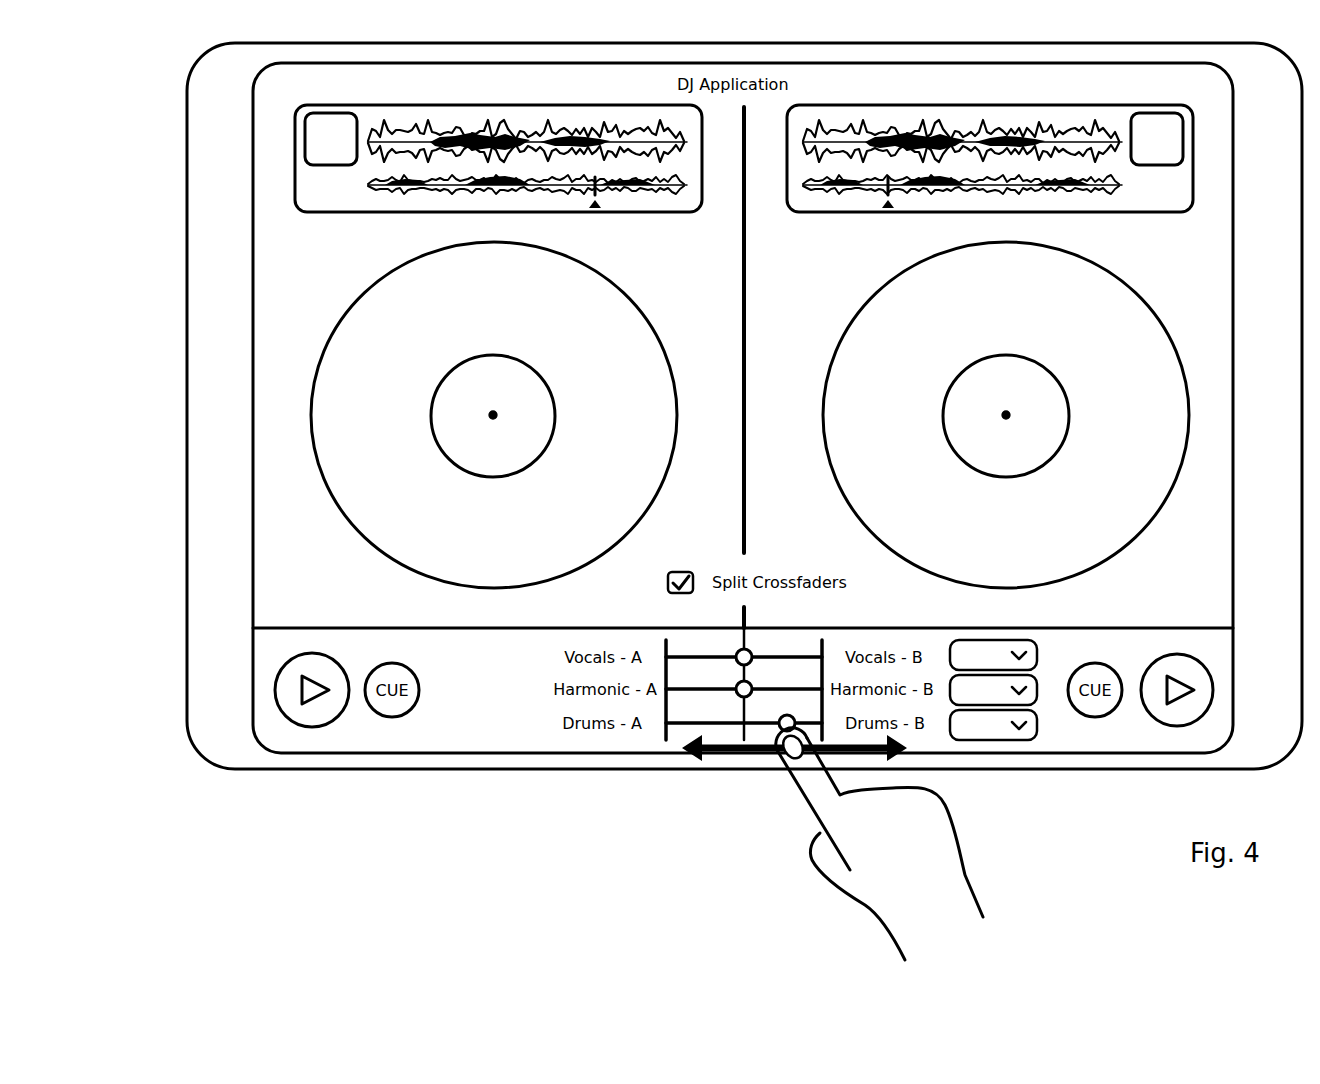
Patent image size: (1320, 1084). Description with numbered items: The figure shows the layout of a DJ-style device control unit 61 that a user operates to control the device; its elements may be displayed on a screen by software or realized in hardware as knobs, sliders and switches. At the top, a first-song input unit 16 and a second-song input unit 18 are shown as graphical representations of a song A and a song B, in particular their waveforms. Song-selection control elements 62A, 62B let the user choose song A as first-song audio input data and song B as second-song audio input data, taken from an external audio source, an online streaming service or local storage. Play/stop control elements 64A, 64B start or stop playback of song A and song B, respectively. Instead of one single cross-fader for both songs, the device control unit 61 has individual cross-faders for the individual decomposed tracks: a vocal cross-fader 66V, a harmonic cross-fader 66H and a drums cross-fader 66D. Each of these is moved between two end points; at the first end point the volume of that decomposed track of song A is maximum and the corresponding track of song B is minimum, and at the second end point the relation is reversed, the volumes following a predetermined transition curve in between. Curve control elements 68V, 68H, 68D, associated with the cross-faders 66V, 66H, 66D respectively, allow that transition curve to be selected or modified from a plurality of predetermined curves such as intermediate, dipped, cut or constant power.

The device control unit 61 is at (173, 164).
The first-song input unit 16 is at (312, 206).
The second-song input unit 18 is at (1120, 201).
The song-selection control element 62A is at (305, 137).
The song-selection control element 62B is at (1172, 130).
The play/stop control element 64A is at (318, 708).
The play/stop control element 64B is at (1200, 678).
The vocal cross-fader 66V is at (752, 652).
The harmonic cross-fader 66H is at (751, 689).
The drums cross-fader 66D is at (775, 720).
The curve control element 68V is at (1035, 647).
The curve control element 68H is at (1030, 685).
The curve control element 68D is at (1033, 722).